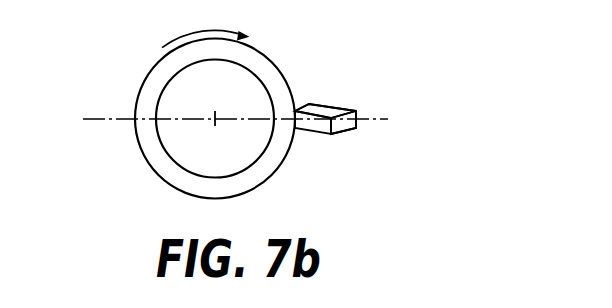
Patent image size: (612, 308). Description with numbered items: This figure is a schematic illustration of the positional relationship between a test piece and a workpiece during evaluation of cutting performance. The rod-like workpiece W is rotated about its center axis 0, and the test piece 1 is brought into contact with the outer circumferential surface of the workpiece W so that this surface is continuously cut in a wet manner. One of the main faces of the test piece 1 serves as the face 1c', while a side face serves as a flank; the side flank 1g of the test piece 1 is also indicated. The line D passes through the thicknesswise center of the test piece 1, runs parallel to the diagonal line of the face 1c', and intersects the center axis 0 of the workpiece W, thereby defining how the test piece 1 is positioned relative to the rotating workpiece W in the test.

The workpiece W is at (141, 87).
The center axis of workpiece 0 is at (222, 108).
The line passing through thicknesswise center of test piece D is at (246, 120).
The test piece 1 is at (342, 126).
The side flank 1g is at (307, 108).
The face 1c' is at (360, 96).